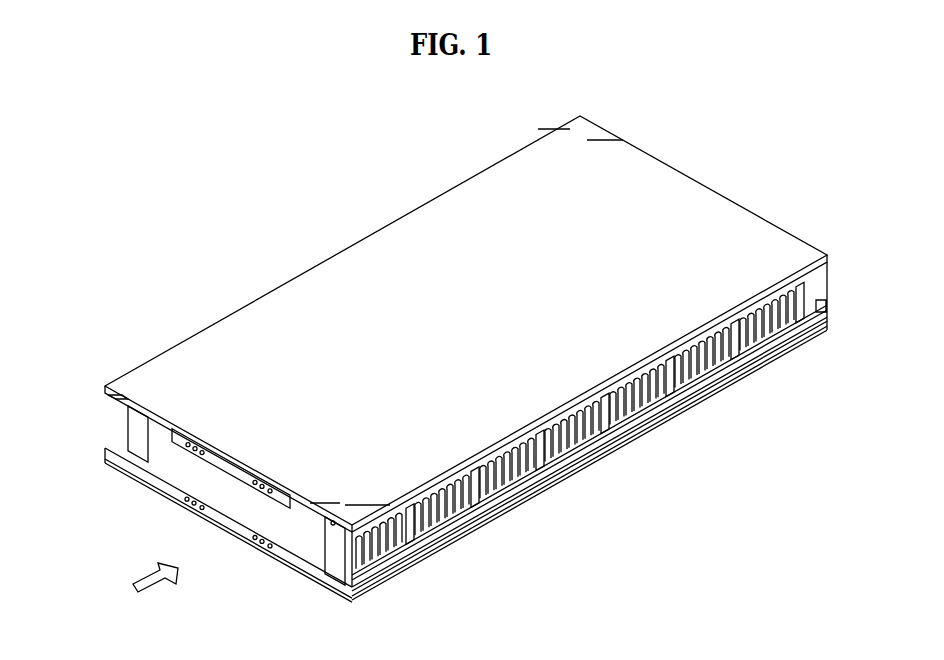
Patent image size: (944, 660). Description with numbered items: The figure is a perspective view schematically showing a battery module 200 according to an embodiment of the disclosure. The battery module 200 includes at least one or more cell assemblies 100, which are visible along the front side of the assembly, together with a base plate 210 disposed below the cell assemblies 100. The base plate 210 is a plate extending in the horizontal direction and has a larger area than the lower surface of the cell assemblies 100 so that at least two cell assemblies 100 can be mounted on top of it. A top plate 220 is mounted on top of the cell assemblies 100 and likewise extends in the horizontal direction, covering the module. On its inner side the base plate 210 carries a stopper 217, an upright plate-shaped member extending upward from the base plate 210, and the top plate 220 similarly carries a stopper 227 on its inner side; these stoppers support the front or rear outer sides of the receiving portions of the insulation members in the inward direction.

The battery module 200 is at (194, 139).
The top plate 220 is at (160, 356).
The base plate 210 is at (110, 445).
The stopper 227 is at (217, 460).
The stopper 217 is at (224, 516).
The cell assembly 100 is at (398, 568).